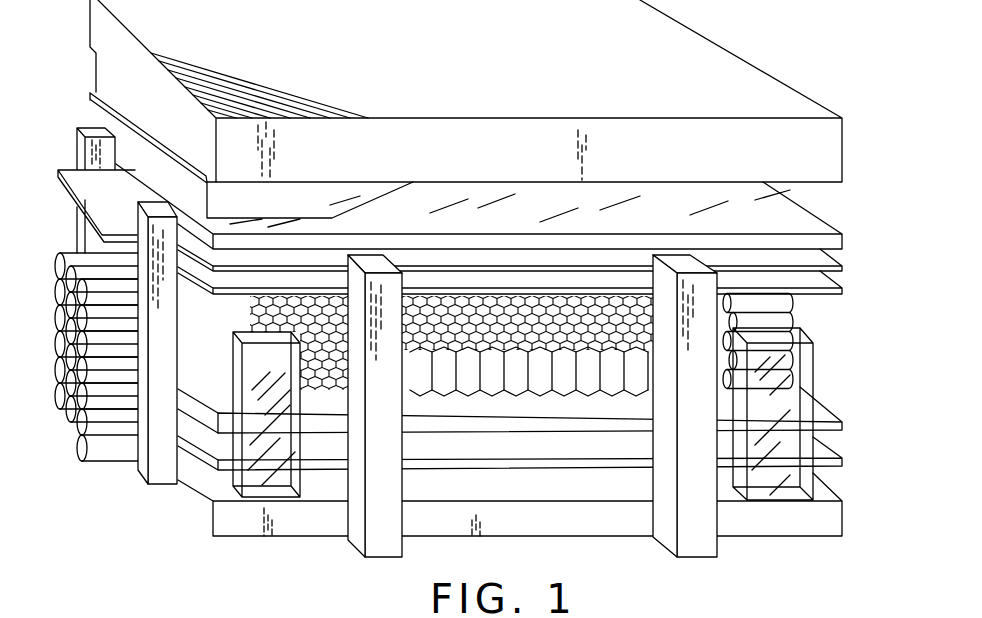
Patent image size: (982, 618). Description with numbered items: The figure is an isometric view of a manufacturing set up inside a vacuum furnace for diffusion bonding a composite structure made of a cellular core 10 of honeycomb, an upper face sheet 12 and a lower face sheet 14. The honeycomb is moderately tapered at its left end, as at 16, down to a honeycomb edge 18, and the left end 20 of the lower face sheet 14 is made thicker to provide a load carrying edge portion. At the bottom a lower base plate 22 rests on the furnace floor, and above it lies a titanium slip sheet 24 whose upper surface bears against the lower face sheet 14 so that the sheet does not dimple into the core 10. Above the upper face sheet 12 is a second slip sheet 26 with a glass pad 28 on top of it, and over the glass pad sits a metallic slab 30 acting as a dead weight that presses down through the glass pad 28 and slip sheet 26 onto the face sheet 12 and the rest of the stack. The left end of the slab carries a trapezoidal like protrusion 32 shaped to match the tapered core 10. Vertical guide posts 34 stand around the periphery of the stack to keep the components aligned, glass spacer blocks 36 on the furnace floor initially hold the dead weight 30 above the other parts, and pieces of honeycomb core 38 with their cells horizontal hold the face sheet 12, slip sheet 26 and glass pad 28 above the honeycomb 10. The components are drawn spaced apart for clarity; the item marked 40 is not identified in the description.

The cellular core 10 is at (451, 377).
The upper face sheet 12 is at (837, 290).
The lower face sheet 14 is at (529, 469).
The tapered portion 16 is at (413, 370).
The honeycomb edge 18 is at (322, 390).
The left end of the lower face sheet 20 is at (214, 403).
The lower base plate 22 is at (291, 538).
The titanium slip sheet 24 is at (522, 463).
The second slip sheet 26 is at (840, 265).
The glass pad 28 is at (830, 238).
The metallic slab 30 is at (717, 53).
The trapezoidal like protrusion 32 is at (313, 215).
The guide posts 34 is at (148, 484).
The glass spacer blocks 36 is at (810, 478).
The honeycomb core support 38 is at (793, 307).
The end block 40 is at (226, 290).